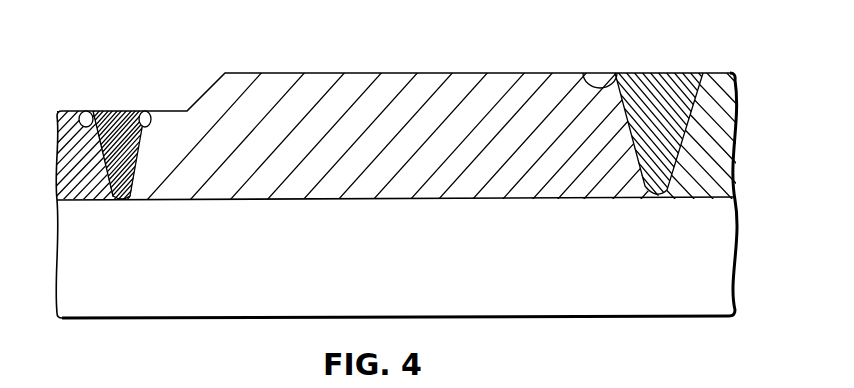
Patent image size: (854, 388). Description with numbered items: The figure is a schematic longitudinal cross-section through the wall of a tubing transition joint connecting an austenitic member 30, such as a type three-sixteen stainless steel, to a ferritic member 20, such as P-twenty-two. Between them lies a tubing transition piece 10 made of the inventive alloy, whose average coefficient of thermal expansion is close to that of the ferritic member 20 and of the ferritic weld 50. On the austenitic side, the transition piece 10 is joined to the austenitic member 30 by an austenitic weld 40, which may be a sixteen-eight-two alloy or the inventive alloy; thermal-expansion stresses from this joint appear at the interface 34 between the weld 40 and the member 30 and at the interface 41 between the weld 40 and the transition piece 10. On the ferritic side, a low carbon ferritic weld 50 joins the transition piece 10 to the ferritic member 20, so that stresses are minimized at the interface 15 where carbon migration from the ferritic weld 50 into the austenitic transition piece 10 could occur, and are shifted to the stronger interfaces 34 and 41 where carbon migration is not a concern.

The tubing transition piece 10 is at (403, 154).
The interface 15 is at (583, 73).
The ferritic member 20 is at (714, 162).
The austenitic member 30 is at (92, 174).
The interface 34 is at (81, 111).
The austenitic weld 40 is at (130, 154).
The interface 41 is at (147, 117).
The low carbon ferritic weld 50 is at (672, 120).